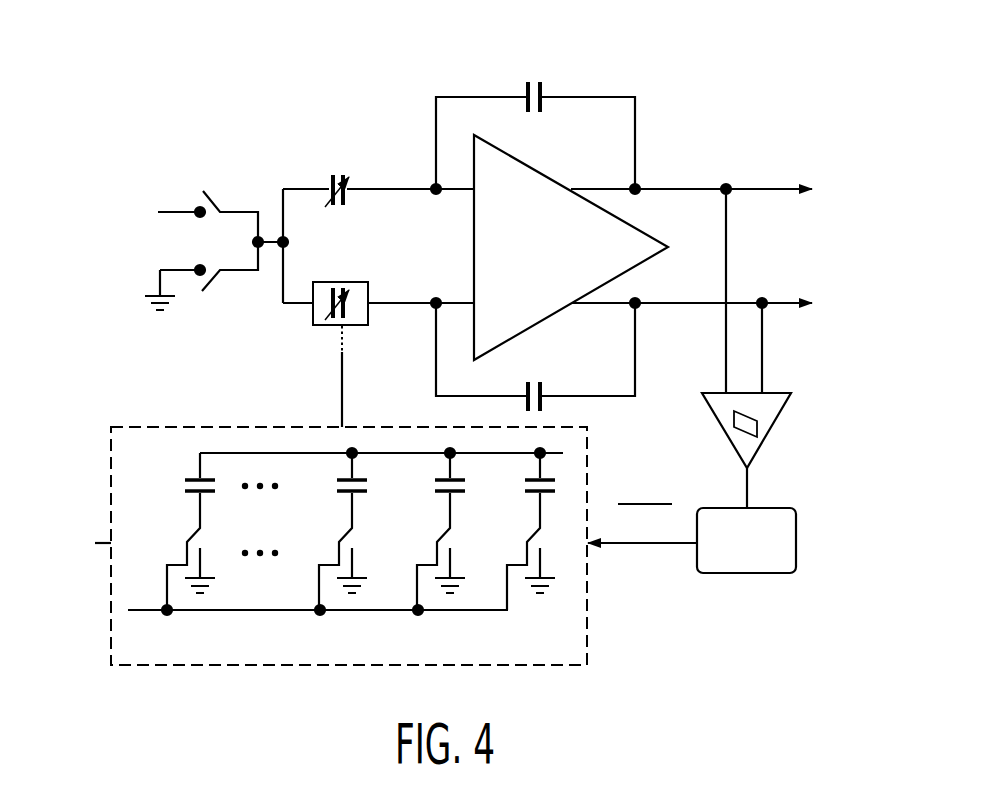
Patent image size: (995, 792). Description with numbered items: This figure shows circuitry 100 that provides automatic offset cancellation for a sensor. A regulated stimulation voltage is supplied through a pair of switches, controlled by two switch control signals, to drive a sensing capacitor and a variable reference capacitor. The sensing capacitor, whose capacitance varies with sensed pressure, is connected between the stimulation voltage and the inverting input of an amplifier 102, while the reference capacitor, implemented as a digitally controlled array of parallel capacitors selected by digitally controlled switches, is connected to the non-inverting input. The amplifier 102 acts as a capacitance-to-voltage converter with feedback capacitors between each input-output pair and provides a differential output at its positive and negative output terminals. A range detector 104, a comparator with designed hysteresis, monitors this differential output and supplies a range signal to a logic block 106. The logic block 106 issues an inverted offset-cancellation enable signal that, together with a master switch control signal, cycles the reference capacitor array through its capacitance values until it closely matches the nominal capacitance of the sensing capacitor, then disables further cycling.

The circuitry 100 is at (788, 82).
The amplifier 102 is at (474, 243).
The range detector 104 is at (782, 393).
The logic block 106 is at (777, 575).